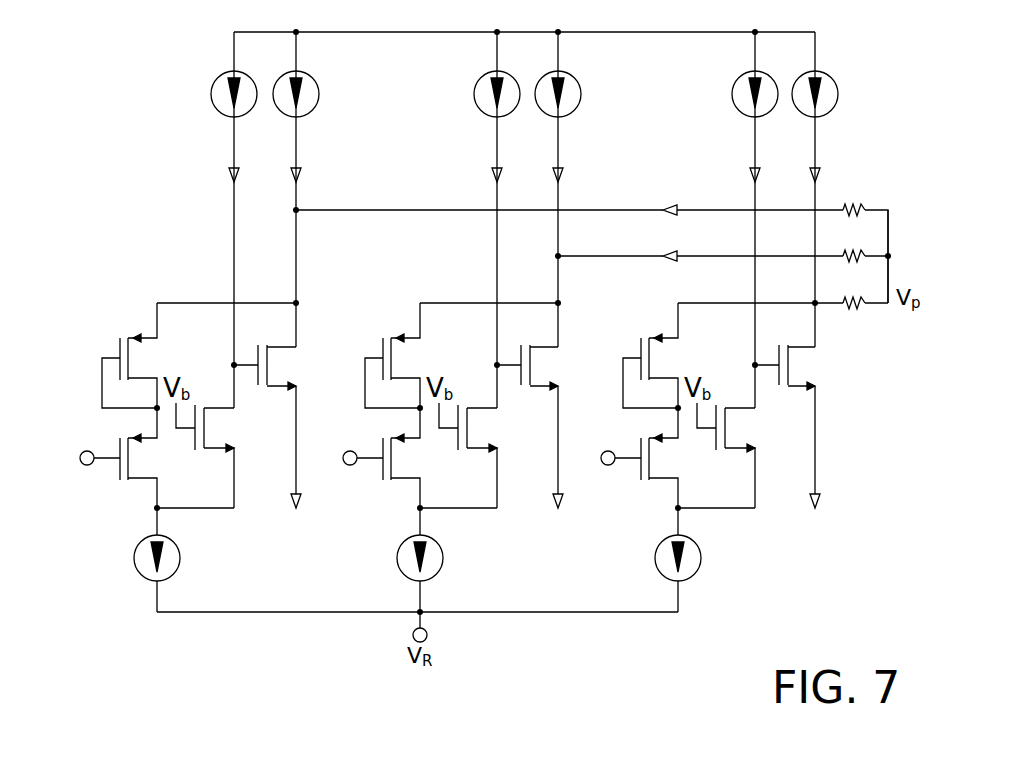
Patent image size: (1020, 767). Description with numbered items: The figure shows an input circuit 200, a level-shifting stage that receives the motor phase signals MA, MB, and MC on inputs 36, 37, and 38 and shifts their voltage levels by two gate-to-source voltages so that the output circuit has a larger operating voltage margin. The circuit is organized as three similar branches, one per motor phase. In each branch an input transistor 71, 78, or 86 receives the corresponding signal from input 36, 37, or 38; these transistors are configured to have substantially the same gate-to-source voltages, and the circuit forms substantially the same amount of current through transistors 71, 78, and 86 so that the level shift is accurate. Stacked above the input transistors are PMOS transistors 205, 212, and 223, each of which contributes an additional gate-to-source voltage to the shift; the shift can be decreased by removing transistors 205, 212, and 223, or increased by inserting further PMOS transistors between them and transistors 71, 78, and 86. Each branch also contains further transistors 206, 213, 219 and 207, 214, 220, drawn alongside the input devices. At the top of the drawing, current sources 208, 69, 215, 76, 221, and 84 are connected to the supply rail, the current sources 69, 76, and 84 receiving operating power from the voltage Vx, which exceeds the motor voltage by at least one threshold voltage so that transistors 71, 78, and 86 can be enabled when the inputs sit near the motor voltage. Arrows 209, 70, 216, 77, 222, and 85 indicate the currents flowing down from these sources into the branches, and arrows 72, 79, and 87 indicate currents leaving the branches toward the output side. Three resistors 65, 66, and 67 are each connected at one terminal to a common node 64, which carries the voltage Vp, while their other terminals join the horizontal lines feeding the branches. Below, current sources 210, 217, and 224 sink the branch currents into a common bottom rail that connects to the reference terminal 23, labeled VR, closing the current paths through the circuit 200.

The input circuit 200 is at (120, 142).
The current source 208 is at (211, 98).
The current source 69 is at (320, 98).
The current source 215 is at (473, 98).
The current source 76 is at (581, 98).
The current source 221 is at (731, 98).
The current source 84 is at (839, 98).
The current 209 is at (231, 178).
The current 70 is at (300, 182).
The current 216 is at (491, 178).
The current 77 is at (563, 182).
The current 222 is at (749, 180).
The current 85 is at (823, 182).
The resistor 65 is at (852, 202).
The resistor 66 is at (852, 248).
The resistor 67 is at (852, 295).
The node 64 is at (891, 254).
The transistor 205 is at (142, 332).
The transistor 212 is at (406, 332).
The transistor 223 is at (662, 332).
The transistor 206 is at (234, 430).
The transistor 213 is at (497, 430).
The transistor 219 is at (755, 430).
The transistor 207 is at (298, 378).
The transistor 214 is at (560, 378).
The transistor 220 is at (818, 378).
The transistor 71 is at (157, 453).
The transistor 78 is at (420, 453).
The transistor 86 is at (678, 453).
The input 36 is at (88, 448).
The input 37 is at (351, 448).
The input 38 is at (609, 448).
The output current 72 is at (302, 500).
The output current 79 is at (564, 500).
The output current 87 is at (821, 500).
The current source 210 is at (181, 558).
The current source 217 is at (444, 558).
The current source 224 is at (702, 558).
The reference voltage terminal 23 is at (411, 633).